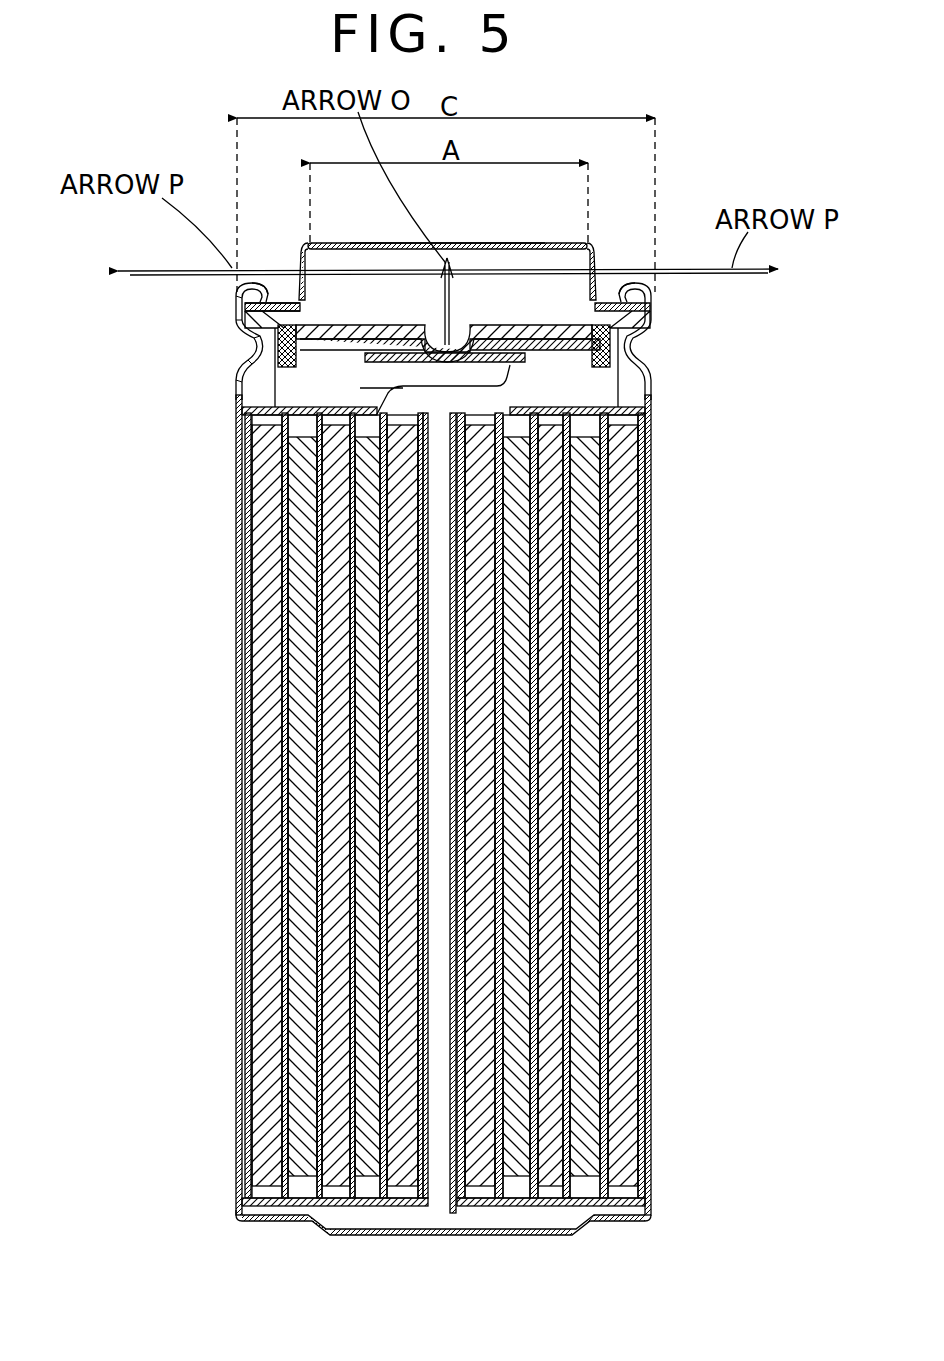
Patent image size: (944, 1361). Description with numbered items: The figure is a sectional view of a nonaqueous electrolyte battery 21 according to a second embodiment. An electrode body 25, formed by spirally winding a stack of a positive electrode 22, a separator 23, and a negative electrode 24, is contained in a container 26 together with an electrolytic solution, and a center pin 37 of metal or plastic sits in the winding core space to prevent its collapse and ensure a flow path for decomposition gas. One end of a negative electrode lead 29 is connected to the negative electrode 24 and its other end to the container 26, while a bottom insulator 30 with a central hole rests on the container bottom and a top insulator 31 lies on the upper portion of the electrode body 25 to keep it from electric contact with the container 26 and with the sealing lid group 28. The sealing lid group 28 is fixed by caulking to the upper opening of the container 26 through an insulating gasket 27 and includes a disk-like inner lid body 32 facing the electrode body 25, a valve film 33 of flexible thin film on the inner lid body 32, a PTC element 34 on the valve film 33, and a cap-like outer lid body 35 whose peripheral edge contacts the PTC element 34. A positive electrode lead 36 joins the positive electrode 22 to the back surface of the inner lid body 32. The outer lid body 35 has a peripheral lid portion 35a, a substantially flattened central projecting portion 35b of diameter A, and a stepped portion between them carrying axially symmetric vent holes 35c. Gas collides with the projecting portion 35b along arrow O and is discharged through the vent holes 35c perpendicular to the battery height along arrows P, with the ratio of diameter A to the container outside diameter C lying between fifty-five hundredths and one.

The nonaqueous electrolyte battery 21 is at (672, 246).
The positive electrode 22 is at (590, 688).
The separator 23 is at (606, 737).
The negative electrode 24 is at (630, 640).
The electrode body 25 is at (735, 616).
The container 26 is at (651, 972).
The insulating gasket 27 is at (252, 292).
The sealing lid group 28 is at (330, 243).
The negative electrode lead 29 is at (330, 1215).
The bottom insulator 30 is at (648, 1210).
The top insulator 31 is at (645, 415).
The inner lid body 32 is at (640, 343).
The valve film 33 is at (370, 328).
The PTC element 34 is at (636, 292).
The outer lid body 35 is at (465, 243).
The lid portion 35a is at (256, 287).
The projecting portion 35b is at (536, 243).
The vent holes 35c is at (298, 300).
The positive electrode lead 36 is at (510, 370).
The center pin 37 is at (455, 1214).